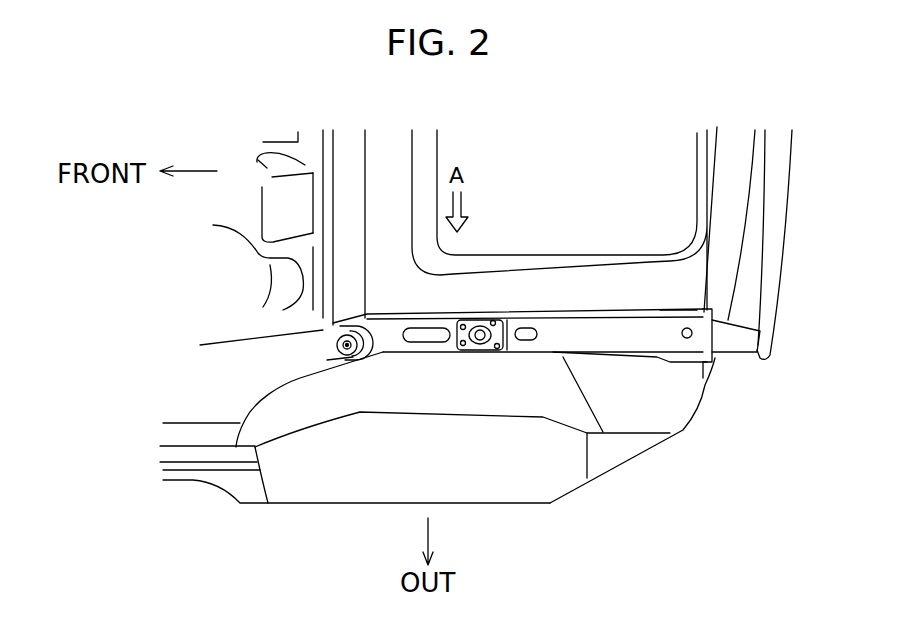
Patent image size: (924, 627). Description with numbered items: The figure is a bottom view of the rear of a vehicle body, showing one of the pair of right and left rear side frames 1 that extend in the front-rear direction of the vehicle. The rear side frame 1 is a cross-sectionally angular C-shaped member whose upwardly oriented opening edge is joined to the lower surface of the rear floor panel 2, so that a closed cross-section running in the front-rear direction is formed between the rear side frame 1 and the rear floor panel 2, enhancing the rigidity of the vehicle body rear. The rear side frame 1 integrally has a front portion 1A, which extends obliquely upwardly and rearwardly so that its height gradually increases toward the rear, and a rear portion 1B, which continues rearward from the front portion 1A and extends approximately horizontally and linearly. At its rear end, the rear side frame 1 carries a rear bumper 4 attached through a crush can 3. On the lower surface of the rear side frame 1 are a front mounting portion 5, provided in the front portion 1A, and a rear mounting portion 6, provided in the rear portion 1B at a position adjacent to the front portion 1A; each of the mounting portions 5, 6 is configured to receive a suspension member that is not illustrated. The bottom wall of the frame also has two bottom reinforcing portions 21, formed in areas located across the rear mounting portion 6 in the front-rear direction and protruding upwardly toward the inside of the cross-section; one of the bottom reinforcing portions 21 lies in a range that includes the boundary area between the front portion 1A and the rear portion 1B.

The rear side frame 1 is at (527, 427).
The rear portion 1B is at (603, 345).
The front portion 1A is at (307, 356).
The rear floor panel 2 is at (632, 283).
The crush can 3 is at (737, 343).
The rear bumper 4 is at (780, 263).
The front mounting portion 5 is at (350, 356).
The rear mounting portion 6 is at (478, 347).
The bottom reinforcing portion 21 is at (427, 342).